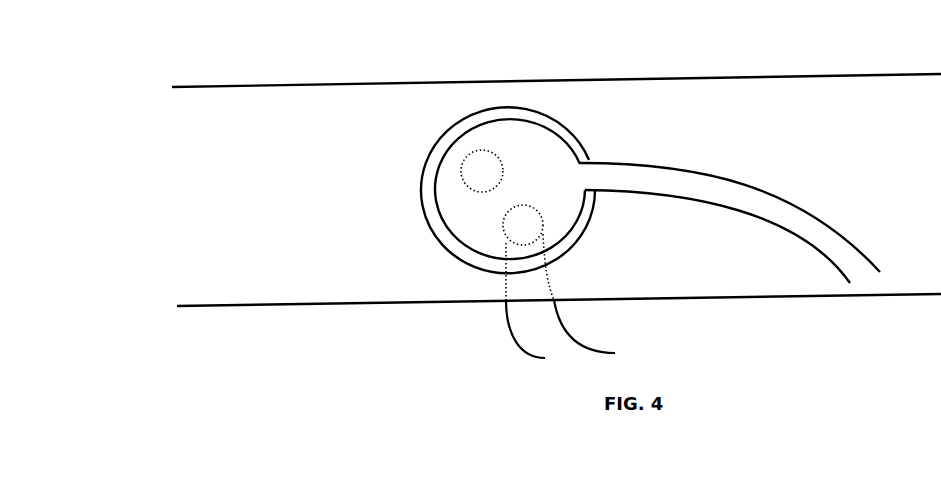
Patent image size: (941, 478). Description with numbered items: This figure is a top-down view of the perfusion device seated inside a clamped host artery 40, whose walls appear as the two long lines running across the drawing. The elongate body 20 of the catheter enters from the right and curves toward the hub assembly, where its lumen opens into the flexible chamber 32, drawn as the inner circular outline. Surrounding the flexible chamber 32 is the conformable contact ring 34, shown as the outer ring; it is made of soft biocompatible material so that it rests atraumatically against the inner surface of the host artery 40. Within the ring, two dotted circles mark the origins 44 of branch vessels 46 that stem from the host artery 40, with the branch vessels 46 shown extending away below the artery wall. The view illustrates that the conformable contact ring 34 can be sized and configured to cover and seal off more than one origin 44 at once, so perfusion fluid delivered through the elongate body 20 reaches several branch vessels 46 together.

The host artery 40 is at (272, 113).
The elongate body 20 is at (780, 199).
The conformable contact ring 34 is at (426, 204).
The flexible chamber 32 is at (471, 205).
The origin 44 is at (468, 172).
The branch vessel 46 is at (540, 323).